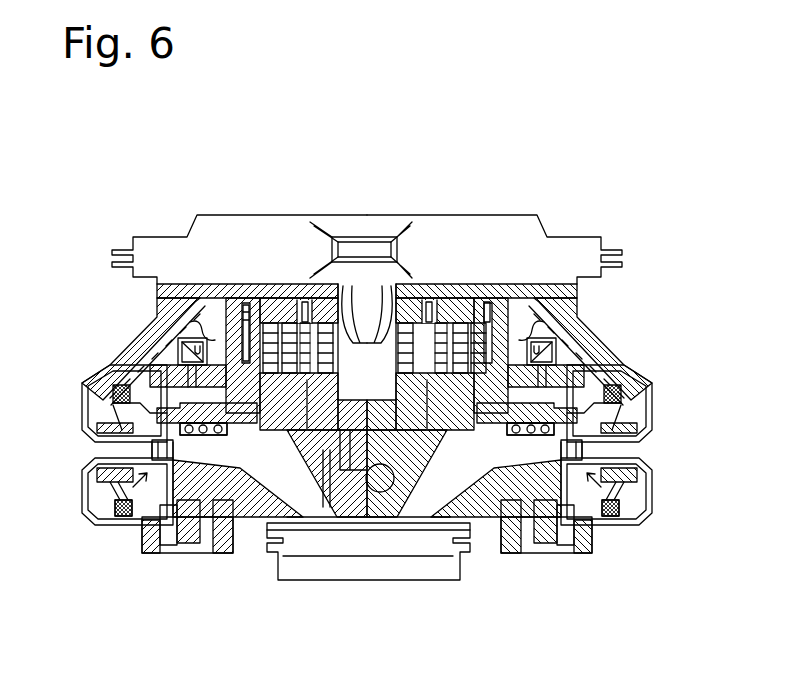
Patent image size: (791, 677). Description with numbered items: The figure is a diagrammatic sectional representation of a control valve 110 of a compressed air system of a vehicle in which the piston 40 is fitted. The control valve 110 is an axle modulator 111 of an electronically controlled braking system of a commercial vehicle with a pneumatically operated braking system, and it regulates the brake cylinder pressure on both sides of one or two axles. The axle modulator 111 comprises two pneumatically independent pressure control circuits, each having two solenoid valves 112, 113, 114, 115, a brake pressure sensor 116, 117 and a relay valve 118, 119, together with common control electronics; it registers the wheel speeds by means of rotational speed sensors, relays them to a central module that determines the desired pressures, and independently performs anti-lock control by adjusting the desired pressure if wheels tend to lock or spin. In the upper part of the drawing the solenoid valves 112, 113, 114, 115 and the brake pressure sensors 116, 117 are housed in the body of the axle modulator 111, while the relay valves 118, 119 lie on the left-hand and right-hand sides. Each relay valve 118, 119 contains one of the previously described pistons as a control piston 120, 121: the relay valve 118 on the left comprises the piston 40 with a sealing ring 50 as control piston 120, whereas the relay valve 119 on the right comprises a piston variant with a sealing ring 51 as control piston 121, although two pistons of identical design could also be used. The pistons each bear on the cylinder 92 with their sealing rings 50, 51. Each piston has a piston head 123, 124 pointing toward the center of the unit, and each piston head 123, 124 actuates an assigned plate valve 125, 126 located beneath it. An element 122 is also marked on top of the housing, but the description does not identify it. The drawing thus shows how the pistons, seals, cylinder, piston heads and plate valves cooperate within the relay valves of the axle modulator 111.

The control valve 110 is at (372, 319).
The axle modulator 111 is at (367, 384).
The solenoid valve 112 is at (248, 303).
The solenoid valve 113 is at (305, 300).
The solenoid valve 114 is at (427, 300).
The solenoid valve 115 is at (480, 300).
The brake pressure sensor 116 is at (177, 350).
The brake pressure sensor 117 is at (558, 350).
The piston 40 is at (92, 401).
The control piston 120 is at (110, 410).
The control piston 121 is at (627, 405).
The relay valve 118 is at (110, 498).
The relay valve 119 is at (623, 492).
The sealing ring 50 is at (118, 525).
The sealing ring 51 is at (605, 530).
The cylinder 92 is at (170, 512).
The piston head 123 is at (174, 452).
The piston head 124 is at (560, 448).
The plate valve 125 is at (203, 502).
The plate valve 126 is at (530, 552).
The spring element 122 is at (322, 222).